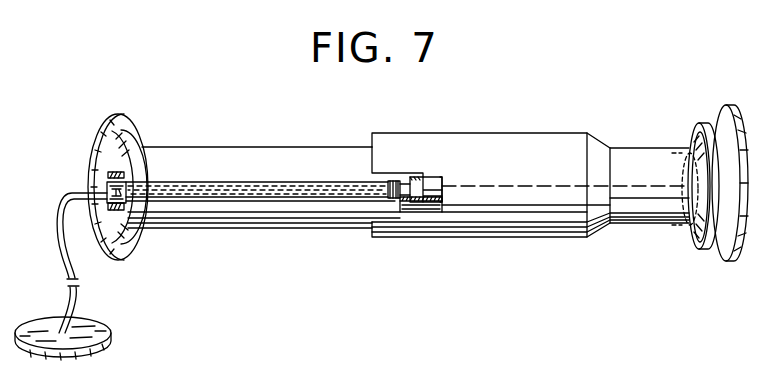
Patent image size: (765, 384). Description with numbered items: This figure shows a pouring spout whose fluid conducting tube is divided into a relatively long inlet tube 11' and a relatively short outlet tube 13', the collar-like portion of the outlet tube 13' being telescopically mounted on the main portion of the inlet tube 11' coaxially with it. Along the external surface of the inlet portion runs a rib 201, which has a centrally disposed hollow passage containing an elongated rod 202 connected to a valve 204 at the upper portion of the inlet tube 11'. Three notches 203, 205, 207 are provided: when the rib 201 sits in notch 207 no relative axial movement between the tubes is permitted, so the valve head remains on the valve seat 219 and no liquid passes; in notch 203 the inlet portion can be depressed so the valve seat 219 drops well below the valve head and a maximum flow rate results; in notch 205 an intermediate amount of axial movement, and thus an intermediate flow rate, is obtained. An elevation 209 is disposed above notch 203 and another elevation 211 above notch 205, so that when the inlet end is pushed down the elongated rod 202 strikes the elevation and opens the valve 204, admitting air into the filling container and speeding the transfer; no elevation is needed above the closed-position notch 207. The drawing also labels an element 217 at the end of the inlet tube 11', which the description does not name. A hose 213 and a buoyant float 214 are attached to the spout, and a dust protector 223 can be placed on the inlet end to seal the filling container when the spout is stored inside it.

The inlet tube 11' is at (260, 122).
The outlet tube 13' is at (530, 163).
The rib 201 is at (258, 182).
The elongated rod 202 is at (410, 184).
The notch 203 is at (421, 180).
The valve 204 is at (129, 205).
The notch 205 is at (400, 210).
The notch 207 is at (366, 226).
The elevation 209 is at (443, 180).
The elevation 211 is at (432, 209).
The hose 213 is at (78, 268).
The buoyant float 214 is at (92, 342).
The coupling 217 is at (107, 187).
The valve seat 219 is at (130, 186).
The dust protector 223 is at (742, 236).